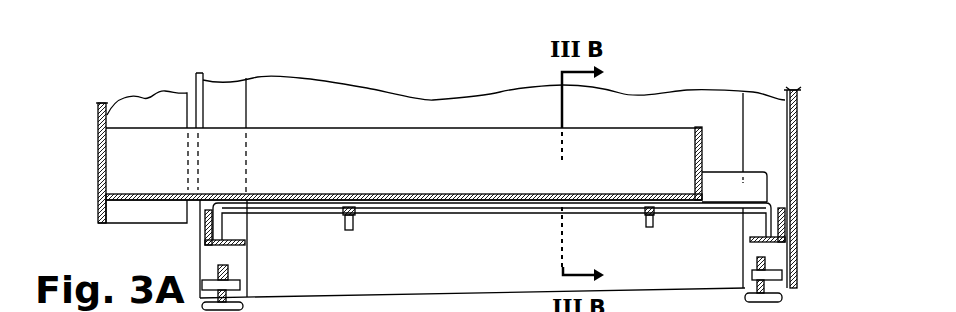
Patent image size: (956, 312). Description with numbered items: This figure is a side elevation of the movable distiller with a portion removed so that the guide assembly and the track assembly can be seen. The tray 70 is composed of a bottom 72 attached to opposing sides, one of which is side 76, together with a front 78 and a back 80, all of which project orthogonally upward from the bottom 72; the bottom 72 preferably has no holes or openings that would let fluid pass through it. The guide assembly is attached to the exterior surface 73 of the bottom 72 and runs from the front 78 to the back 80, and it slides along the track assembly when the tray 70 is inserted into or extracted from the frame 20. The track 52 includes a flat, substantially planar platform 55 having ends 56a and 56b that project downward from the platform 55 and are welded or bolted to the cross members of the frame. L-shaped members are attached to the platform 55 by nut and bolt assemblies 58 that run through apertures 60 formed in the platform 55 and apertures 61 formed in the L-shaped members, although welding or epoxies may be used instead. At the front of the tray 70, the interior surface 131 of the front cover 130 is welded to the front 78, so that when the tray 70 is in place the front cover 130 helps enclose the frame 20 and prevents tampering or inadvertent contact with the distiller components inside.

The frame 20 is at (472, 300).
The track 52 is at (752, 187).
The platform 55 is at (500, 213).
The end of platform 56a is at (245, 227).
The end of platform 56b is at (767, 220).
The nut and bolt assembly 58 is at (350, 230).
The aperture 60 is at (347, 208).
The aperture 61 is at (367, 215).
The tray 70 is at (155, 108).
The bottom 72 is at (457, 193).
The exterior surface of bottom 73 is at (428, 200).
The side 76 is at (805, 199).
The front 78 is at (96, 137).
The back 80 is at (702, 152).
The front cover 130 is at (98, 132).
The interior surface of front cover 131 is at (110, 107).